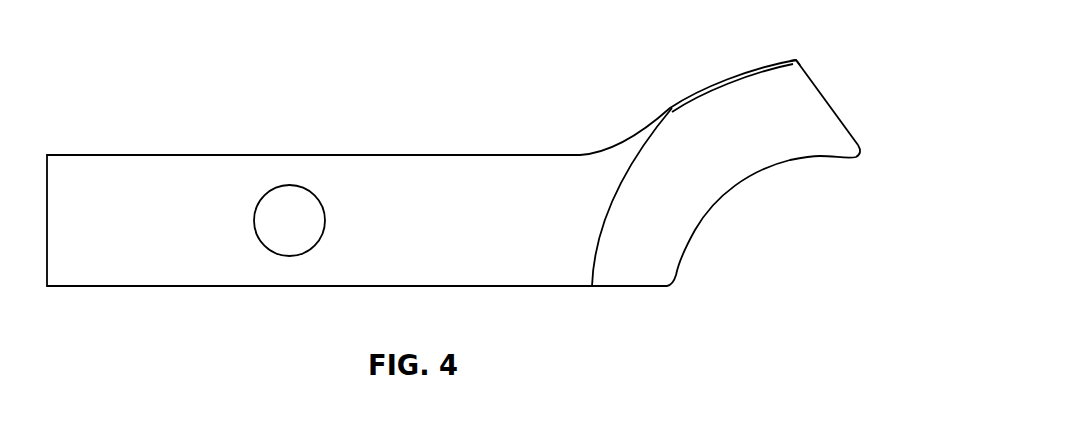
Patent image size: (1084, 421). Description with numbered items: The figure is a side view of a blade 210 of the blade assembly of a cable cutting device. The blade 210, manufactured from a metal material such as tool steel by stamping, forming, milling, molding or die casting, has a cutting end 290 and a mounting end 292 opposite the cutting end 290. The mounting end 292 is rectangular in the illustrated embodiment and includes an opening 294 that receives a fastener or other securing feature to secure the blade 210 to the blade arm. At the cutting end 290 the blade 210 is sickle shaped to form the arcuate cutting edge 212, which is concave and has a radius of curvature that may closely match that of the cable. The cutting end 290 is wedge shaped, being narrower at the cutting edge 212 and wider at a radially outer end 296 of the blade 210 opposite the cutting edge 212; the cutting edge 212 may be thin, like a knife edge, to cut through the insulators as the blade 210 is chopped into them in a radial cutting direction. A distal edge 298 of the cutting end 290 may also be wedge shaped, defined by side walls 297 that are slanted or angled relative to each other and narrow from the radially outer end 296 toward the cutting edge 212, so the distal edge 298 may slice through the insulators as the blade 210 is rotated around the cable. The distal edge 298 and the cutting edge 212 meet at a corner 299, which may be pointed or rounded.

The blade 210 is at (500, 75).
The arcuate cutting edge 212 is at (733, 183).
The cutting end 290 is at (715, 103).
The mounting end 292 is at (347, 173).
The opening 294 is at (280, 195).
The radially outer end 296 is at (670, 110).
The side walls 297 is at (795, 90).
The distal edge 298 is at (828, 100).
The corner 299 is at (860, 140).